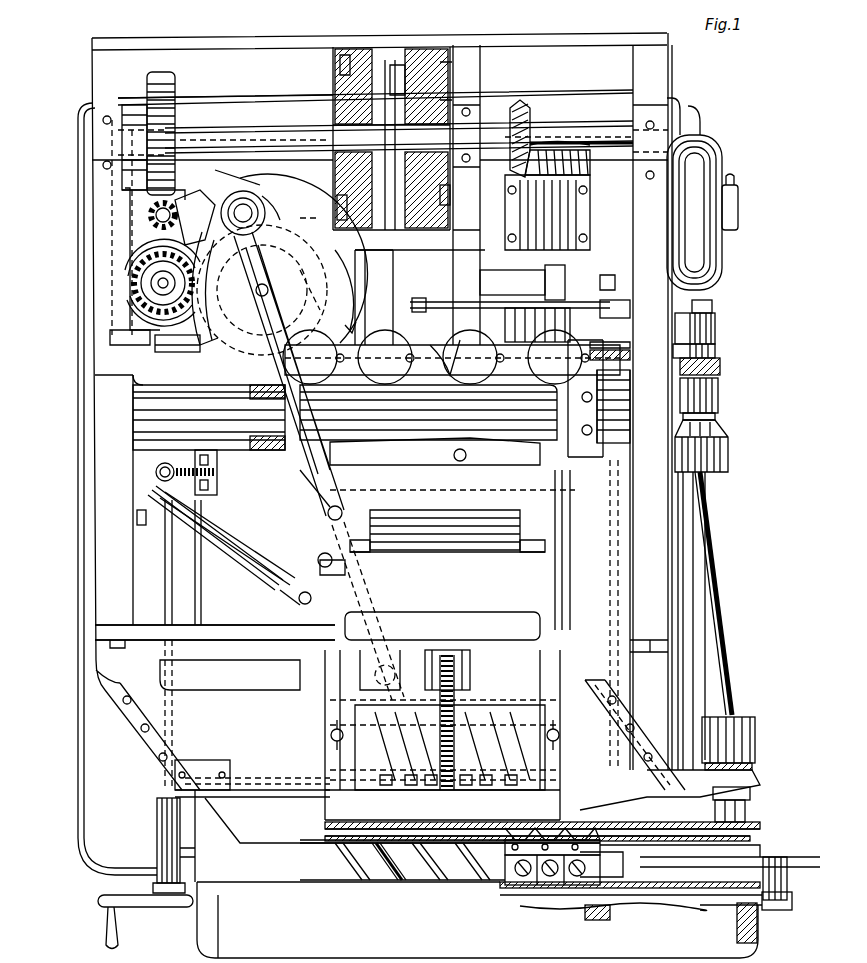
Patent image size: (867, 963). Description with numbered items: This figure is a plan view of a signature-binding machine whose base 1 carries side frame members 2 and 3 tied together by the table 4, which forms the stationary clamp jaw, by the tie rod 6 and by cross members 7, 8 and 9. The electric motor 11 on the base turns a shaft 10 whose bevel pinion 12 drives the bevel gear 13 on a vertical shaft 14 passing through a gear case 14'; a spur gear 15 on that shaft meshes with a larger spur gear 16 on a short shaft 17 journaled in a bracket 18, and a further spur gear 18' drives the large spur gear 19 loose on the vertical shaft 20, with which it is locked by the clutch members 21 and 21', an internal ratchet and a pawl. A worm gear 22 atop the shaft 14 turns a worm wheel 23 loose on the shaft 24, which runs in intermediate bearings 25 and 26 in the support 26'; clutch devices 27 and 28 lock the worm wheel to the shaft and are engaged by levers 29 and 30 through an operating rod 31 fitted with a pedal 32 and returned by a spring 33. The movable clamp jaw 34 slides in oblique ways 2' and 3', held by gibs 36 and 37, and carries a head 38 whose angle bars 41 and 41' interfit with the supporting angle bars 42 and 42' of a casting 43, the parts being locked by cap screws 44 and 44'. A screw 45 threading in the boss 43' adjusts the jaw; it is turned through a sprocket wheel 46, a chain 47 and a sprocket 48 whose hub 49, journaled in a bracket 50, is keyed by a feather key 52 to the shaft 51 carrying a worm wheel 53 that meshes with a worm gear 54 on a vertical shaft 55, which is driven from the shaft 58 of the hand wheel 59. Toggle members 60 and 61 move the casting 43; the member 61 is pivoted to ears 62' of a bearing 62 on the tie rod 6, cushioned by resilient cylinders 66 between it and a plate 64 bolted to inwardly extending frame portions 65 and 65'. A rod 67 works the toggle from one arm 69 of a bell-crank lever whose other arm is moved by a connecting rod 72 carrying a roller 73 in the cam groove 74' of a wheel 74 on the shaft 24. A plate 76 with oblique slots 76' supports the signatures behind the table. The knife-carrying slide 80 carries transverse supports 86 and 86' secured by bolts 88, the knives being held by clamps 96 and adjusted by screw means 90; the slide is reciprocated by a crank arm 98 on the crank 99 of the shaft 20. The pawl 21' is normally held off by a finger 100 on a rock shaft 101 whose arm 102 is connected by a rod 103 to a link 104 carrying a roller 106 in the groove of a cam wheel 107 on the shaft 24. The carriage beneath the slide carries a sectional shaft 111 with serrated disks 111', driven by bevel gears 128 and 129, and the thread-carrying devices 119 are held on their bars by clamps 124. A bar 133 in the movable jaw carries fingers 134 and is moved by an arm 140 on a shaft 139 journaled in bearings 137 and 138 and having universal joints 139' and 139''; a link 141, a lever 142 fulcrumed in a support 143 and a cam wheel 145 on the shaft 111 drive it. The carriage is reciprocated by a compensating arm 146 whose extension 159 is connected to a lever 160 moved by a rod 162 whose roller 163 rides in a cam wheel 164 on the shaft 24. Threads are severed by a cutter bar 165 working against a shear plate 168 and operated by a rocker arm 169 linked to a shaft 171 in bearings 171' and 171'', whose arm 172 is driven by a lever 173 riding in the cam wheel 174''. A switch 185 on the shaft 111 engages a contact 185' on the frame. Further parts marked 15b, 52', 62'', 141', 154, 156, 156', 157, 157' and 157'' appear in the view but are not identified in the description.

The housing 1 is at (685, 122).
The section line 2 is at (155, 293).
The section line 2' is at (151, 708).
The frame column 3 is at (626, 570).
The frame column part 3' is at (646, 652).
The base 4 is at (477, 920).
The bracket 6 is at (273, 465).
The rail 7 is at (248, 628).
The carriage head 8 is at (145, 385).
The frame plate 9 is at (510, 35).
The clutch shaft 10 is at (365, 232).
The motor 11 is at (702, 212).
The crank hub 12 is at (236, 200).
The shaft 13 is at (125, 205).
The sector gear 14 is at (198, 210).
The sector gear arm 14' is at (253, 168).
The pinion 15 is at (174, 218).
The section arrow 15b is at (434, 810).
The gear plate 16 is at (140, 252).
The gear 17 is at (160, 284).
The gear guard 18 is at (119, 259).
The gear guard 18' is at (117, 311).
The ring 19 is at (204, 288).
The eccentric center 20 is at (250, 294).
The connecting rod 21 is at (289, 371).
The rod end 21' is at (213, 348).
The worm housing 22 is at (110, 235).
The worm 23 is at (176, 90).
The drive shaft 24 is at (210, 135).
The top rail 25 is at (320, 70).
The column 26 is at (480, 195).
The column 26' is at (374, 297).
The screw 27 is at (95, 125).
The screw 28 is at (100, 155).
The bracket 29 is at (115, 340).
The stop block 30 is at (170, 345).
The rod 31 is at (620, 510).
The plate 32 is at (600, 918).
The clip 33 is at (618, 340).
The plate 34 is at (262, 843).
The diagonal brace 36 is at (135, 712).
The diagonal brace 37 is at (632, 698).
The frame 38 is at (560, 805).
The foot 41 is at (462, 760).
The foot 41' is at (596, 740).
The upright 42 is at (339, 675).
The upright 42' is at (551, 675).
The plate 43 is at (442, 630).
The plate 43' is at (388, 660).
The bolt 44 is at (452, 725).
The bolt 44' is at (596, 715).
The slat assembly 45 is at (450, 720).
The bar 46 is at (482, 790).
The screw 47 is at (418, 790).
The post 48 is at (160, 797).
The block 49 is at (202, 775).
The bar 50 is at (238, 790).
The rod 51 is at (205, 665).
The rod 52 is at (154, 764).
The bracket 52' is at (225, 472).
The screw 53 is at (222, 478).
The adjusting screw 54 is at (165, 470).
The nut 55 is at (160, 480).
The rods 58 is at (165, 580).
The handle 59 is at (150, 907).
The block 60 is at (475, 552).
The bar 61 is at (390, 468).
The plate 62 is at (428, 412).
The side plate 62' is at (581, 414).
The plate end 62'' is at (303, 484).
The rail 64 is at (451, 357).
The screw column 65 is at (624, 406).
The block 65' is at (195, 417).
The cam 66 is at (435, 357).
The base bar 67 is at (412, 552).
The lever 69 is at (435, 450).
The pin 72 is at (304, 215).
The bearing 73 is at (338, 195).
The clutch 74 is at (379, 138).
The clutch member 74' is at (359, 42).
The slats 76 is at (450, 860).
The slats 76' is at (339, 873).
The plate 80 is at (265, 688).
The bar 86 is at (257, 798).
The bar 86' is at (564, 769).
The nut 88 is at (469, 670).
The pin 90 is at (317, 735).
The bar 96 is at (370, 790).
The disk 98 is at (280, 292).
The bearing 99 is at (274, 204).
The link 100 is at (280, 317).
The bar 101 is at (384, 298).
The bar 102 is at (386, 315).
The shaft 103 is at (398, 246).
The pin 104 is at (389, 75).
The clutch disk 106 is at (405, 52).
The clutch disk 107 is at (440, 60).
The rod 111 is at (577, 459).
The rod 111' is at (584, 520).
The terminal block 119 is at (580, 828).
The plate 124 is at (620, 862).
The gear housing 128 is at (560, 185).
The bevel gear 129 is at (525, 100).
The plate 133 is at (690, 845).
The bar 134 is at (484, 875).
The sleeve 137 is at (718, 388).
The block 138 is at (752, 792).
The rod 139 is at (736, 593).
The sleeve 139' is at (729, 446).
The sleeve 139'' is at (759, 740).
The block 140 is at (748, 812).
The collar 141 is at (717, 358).
The collar 141' is at (342, 652).
The clip 142 is at (627, 355).
The bracket 143 is at (420, 300).
The housing 145 is at (510, 330).
The arm 146 is at (227, 538).
The block 154 is at (330, 572).
The pivot 156 is at (307, 552).
The pivot 156' is at (286, 602).
The rod 157 is at (215, 538).
The link 157' is at (274, 594).
The block 157'' is at (122, 519).
The pivot 159 is at (315, 520).
The hole 160 is at (478, 455).
The edge 162 is at (512, 440).
The bearing 163 is at (445, 195).
The ring 164 is at (460, 77).
The plate 165 is at (685, 890).
The block 168 is at (575, 910).
The collar 169 is at (792, 900).
The rod 171 is at (724, 621).
The sleeve 171' is at (793, 878).
The sleeve 171'' is at (722, 328).
The cap 172 is at (713, 303).
The bracket 173 is at (615, 308).
The shaft 174'' is at (510, 298).
The block 185 is at (522, 282).
The block 185' is at (632, 287).